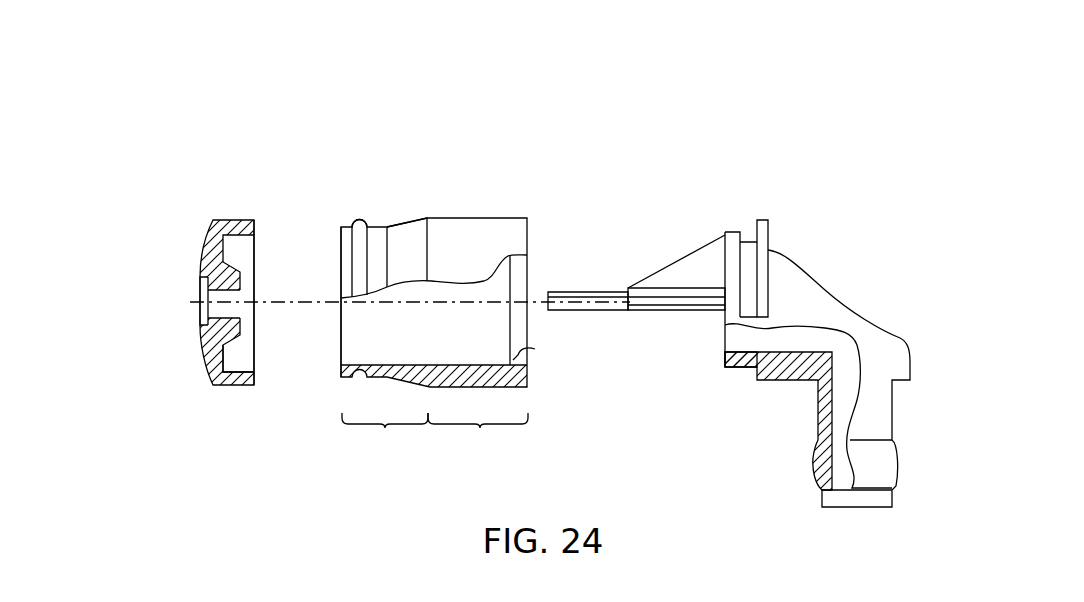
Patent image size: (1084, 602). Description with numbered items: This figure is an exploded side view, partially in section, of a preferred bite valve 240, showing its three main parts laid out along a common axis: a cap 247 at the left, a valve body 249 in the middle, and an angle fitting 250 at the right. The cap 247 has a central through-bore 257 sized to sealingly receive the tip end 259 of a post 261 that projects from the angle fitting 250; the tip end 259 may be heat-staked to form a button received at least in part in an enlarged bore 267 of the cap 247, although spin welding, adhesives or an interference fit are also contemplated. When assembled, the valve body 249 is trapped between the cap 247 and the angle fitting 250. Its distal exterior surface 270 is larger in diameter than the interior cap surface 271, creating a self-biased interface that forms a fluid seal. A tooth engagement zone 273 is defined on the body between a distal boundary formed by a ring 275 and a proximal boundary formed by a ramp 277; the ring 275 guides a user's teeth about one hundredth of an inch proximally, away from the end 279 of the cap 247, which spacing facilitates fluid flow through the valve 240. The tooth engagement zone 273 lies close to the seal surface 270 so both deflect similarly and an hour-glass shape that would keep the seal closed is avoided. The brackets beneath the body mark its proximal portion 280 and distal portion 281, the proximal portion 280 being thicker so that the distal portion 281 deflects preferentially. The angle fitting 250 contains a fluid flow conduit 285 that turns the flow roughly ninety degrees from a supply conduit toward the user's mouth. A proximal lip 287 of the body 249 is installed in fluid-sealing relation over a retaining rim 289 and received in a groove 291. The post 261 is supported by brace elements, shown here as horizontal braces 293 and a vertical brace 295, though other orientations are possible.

The bite valve 240 is at (256, 465).
The cap 247 is at (214, 246).
The valve body 249 is at (490, 233).
The angle fitting 250 is at (866, 322).
The central through-bore 257 is at (221, 298).
The tip end 259 is at (553, 292).
The post 261 is at (594, 297).
The enlarged bore 267 is at (206, 310).
The distal exterior surface 270 is at (347, 222).
The interior cap surface 271 is at (246, 350).
The tooth engagement zone 273 is at (383, 222).
The ring 275 is at (361, 232).
The ramp 277 is at (410, 220).
The end 279 is at (254, 220).
The proximal portion 280 is at (478, 436).
The distal portion 281 is at (385, 438).
The fluid flow conduit 285 is at (741, 343).
The proximal lip 287 is at (535, 349).
The retaining rim 289 is at (733, 238).
The groove 291 is at (752, 228).
The horizontal braces 293 is at (652, 298).
The vertical brace 295 is at (690, 263).